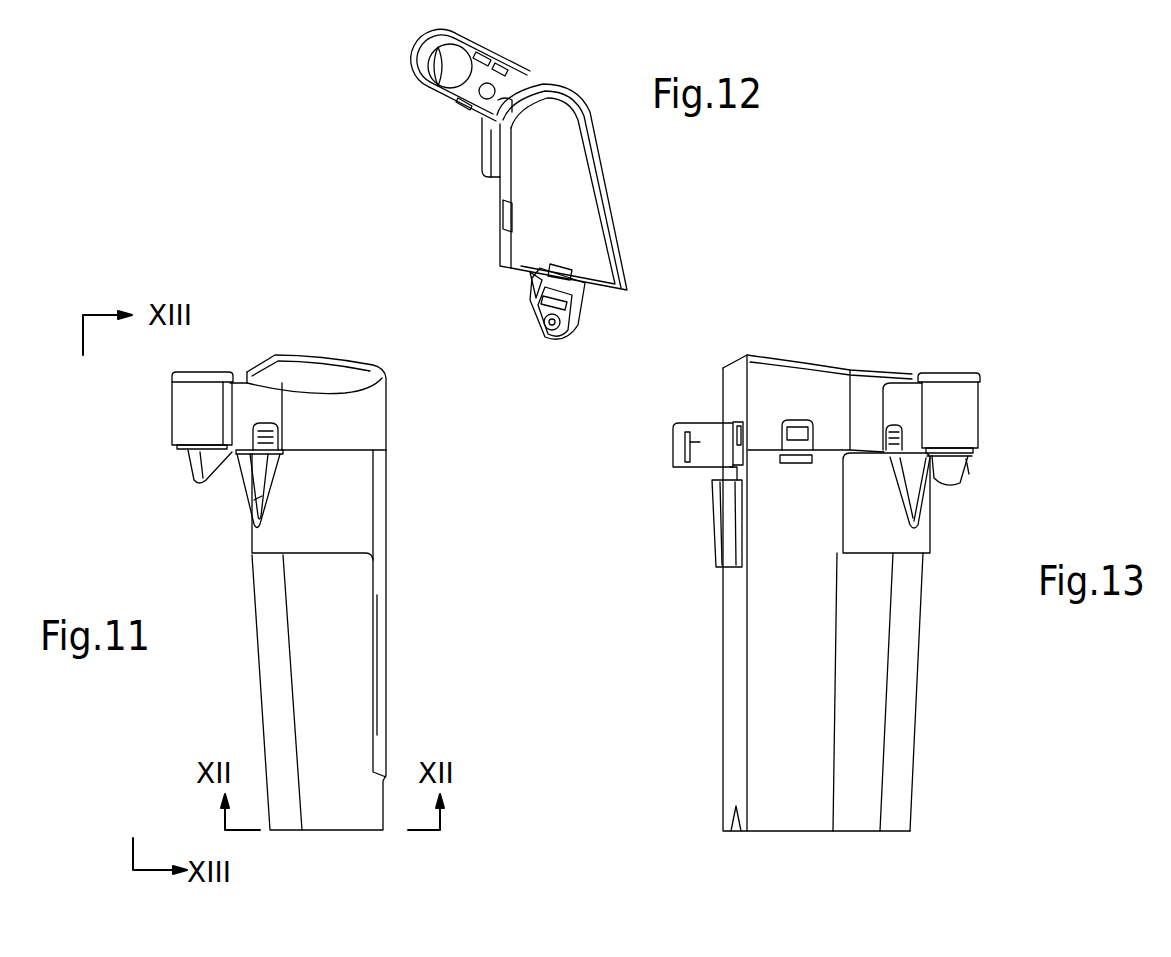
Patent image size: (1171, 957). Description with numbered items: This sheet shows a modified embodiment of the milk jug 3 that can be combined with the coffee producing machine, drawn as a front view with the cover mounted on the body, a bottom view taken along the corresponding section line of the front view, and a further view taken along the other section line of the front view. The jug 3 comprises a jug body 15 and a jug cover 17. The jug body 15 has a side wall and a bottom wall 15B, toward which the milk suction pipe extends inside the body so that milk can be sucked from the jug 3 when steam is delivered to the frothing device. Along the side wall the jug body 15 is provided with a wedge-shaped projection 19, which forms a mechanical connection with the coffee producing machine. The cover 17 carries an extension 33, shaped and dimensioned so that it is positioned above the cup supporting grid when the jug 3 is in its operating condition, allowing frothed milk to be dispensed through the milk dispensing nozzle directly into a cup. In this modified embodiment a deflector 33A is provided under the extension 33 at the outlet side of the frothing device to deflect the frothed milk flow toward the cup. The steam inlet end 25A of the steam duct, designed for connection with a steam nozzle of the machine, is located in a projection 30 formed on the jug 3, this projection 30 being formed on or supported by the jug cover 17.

In FIG. 12, the milk jug 3 is at (590, 97).
In FIG. 13, the milk jug 3 is at (780, 327).
In FIG. 11, the jug body 15 is at (412, 560).
In FIG. 13, the jug body 15 is at (940, 700).
In FIG. 12, the bottom wall 15B is at (575, 192).
In FIG. 11, the jug cover 17 is at (400, 402).
In FIG. 13, the jug cover 17 is at (1007, 400).
In FIG. 12, the wedge-shaped projection 19 is at (530, 292).
In FIG. 13, the wedge-shaped projection 19 is at (722, 522).
In FIG. 12, the steam inlet end 25A is at (558, 332).
In FIG. 12, the projection 30 is at (578, 310).
In FIG. 13, the projection 30 is at (698, 442).
In FIG. 11, the extension 33 is at (188, 418).
In FIG. 12, the extension 33 is at (432, 110).
In FIG. 13, the extension 33 is at (968, 423).
In FIG. 11, the deflector 33A is at (197, 477).
In FIG. 13, the deflector 33A is at (953, 470).